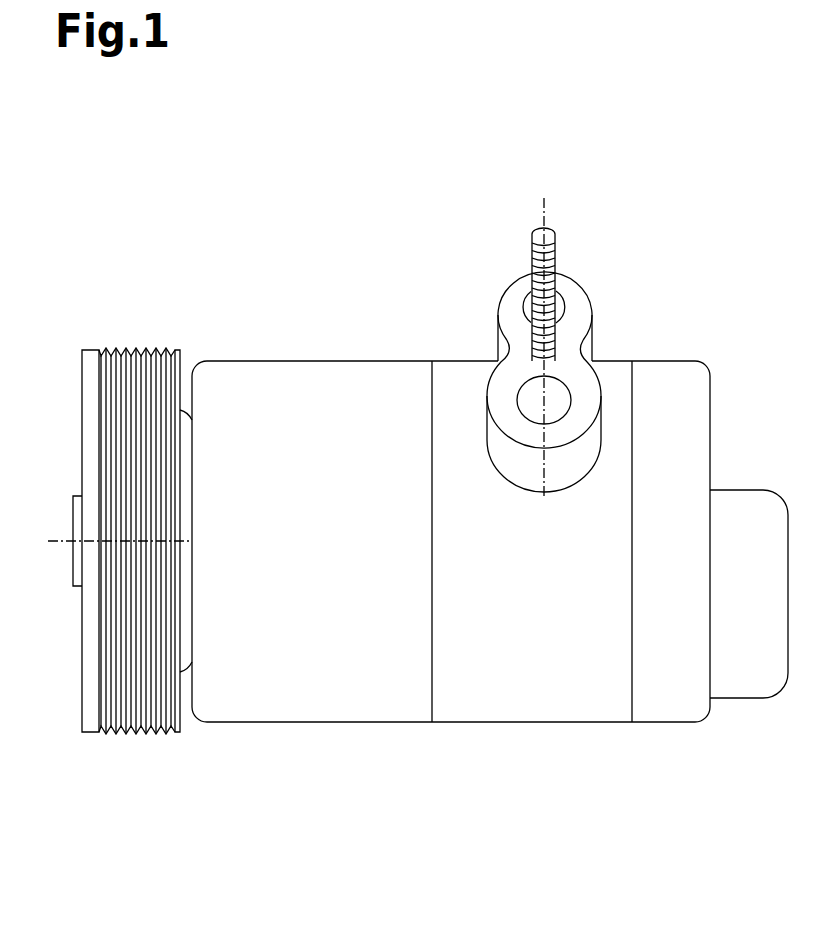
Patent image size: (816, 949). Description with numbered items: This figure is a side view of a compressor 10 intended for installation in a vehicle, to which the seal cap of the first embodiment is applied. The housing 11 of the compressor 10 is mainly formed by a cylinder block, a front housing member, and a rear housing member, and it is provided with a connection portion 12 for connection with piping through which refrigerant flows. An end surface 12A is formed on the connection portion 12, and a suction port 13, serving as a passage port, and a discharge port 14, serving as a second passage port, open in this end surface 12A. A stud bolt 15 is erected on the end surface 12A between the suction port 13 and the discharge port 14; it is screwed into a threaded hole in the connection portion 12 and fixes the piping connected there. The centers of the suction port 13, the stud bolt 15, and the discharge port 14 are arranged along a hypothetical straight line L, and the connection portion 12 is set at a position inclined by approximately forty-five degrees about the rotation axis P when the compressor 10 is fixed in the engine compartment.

The compressor 10 is at (307, 229).
The housing 11 is at (479, 698).
The connection portion 12 is at (498, 302).
The end surface 12A is at (517, 288).
The suction port 13 is at (537, 405).
The discharge port 14 is at (563, 302).
The stud bolt 15 is at (557, 248).